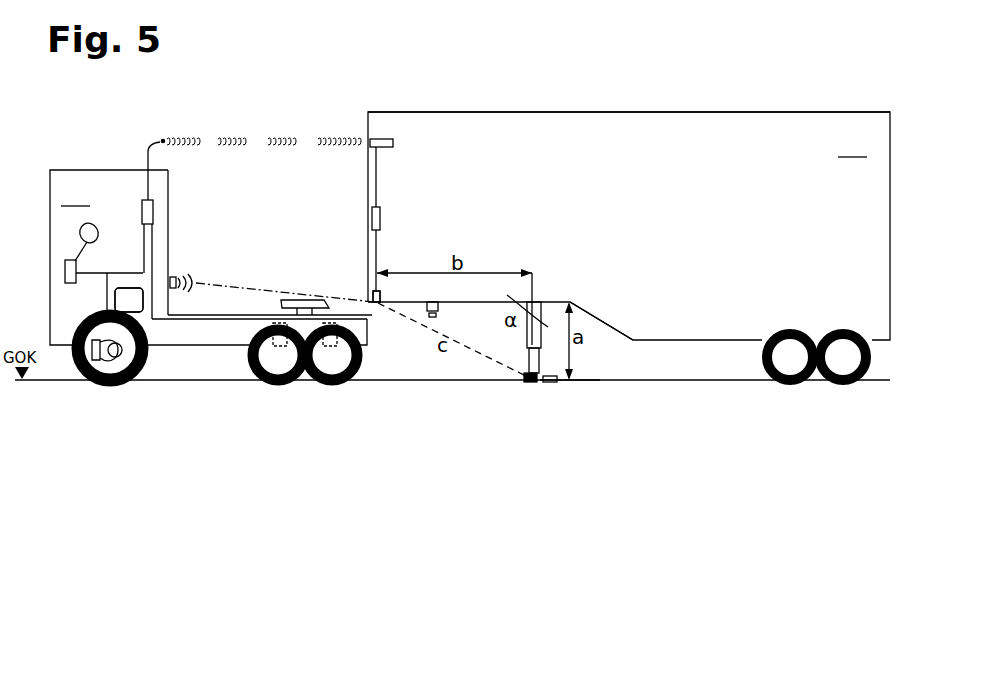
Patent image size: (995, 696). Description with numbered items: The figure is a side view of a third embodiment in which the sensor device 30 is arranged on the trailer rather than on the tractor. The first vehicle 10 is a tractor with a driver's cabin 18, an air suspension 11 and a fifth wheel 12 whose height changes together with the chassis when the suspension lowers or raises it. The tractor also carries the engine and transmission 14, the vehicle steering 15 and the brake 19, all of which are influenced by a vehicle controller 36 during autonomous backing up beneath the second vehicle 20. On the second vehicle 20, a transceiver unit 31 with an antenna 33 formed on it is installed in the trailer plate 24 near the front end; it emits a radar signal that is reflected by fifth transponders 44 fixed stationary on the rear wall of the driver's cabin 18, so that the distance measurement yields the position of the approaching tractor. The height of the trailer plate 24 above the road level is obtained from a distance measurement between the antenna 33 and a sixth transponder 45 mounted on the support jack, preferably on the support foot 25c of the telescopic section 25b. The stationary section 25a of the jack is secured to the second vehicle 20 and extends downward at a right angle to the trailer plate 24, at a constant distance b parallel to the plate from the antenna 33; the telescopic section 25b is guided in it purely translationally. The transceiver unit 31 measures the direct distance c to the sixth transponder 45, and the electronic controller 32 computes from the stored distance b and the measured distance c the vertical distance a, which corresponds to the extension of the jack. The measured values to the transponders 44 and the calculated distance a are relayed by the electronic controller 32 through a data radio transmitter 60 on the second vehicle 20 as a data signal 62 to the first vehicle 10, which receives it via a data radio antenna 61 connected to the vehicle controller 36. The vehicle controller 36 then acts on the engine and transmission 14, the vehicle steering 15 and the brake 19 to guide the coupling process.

The first vehicle 10 is at (75, 196).
The air suspension 11 is at (248, 328).
The fifth wheel 12 is at (297, 298).
The engine and transmission 14 is at (138, 312).
The vehicle steering 15 is at (65, 276).
The driver's cabin 18 is at (47, 178).
The brake 19 is at (68, 362).
The second vehicle 20 is at (629, 246).
The trailer plate 24 is at (457, 305).
The stationary section 25a is at (548, 300).
The telescopic section 25b is at (560, 382).
The support foot 25c is at (552, 383).
The sensor device 30 is at (412, 196).
The transceiver unit 31 is at (378, 306).
The electronic controller 32 is at (371, 218).
The antenna 33 is at (376, 296).
The vehicle controller 36 is at (142, 207).
The fifth transponder 44 is at (172, 276).
The sixth transponder 45 is at (525, 383).
The data radio transmitter 60 is at (393, 139).
The data radio antenna 61 is at (150, 160).
The data signal 62 is at (246, 142).